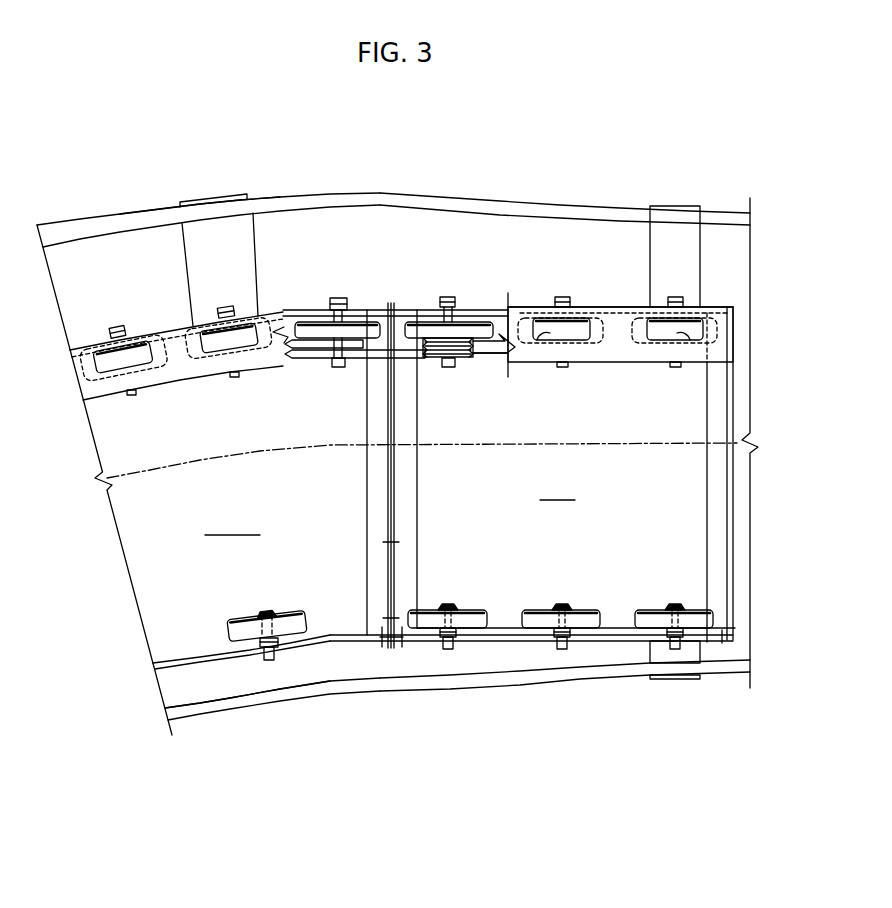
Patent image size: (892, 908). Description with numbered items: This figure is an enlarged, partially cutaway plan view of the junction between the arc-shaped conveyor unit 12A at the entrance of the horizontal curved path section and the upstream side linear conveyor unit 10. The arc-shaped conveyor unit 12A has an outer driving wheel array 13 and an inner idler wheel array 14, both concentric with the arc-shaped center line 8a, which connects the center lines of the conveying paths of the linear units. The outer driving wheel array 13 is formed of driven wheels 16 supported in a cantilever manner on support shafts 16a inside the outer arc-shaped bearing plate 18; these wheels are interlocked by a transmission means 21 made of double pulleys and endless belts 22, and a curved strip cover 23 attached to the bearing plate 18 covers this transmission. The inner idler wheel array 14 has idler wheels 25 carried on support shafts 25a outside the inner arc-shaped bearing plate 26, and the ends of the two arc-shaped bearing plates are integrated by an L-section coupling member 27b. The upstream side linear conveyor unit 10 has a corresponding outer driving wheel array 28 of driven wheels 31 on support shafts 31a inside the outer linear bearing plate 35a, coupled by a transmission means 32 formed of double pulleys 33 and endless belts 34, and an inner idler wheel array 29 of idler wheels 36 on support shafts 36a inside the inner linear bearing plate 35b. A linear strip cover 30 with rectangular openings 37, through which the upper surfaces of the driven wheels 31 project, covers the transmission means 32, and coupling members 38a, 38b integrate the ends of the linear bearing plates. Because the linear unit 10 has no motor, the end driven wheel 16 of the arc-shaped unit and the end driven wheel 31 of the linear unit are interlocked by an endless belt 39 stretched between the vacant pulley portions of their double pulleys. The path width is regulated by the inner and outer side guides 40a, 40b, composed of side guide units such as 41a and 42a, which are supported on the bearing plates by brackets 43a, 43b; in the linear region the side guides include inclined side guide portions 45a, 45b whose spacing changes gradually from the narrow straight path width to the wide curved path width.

The arc-shaped center line 8a is at (153, 470).
The upstream side linear conveyor unit 10 is at (576, 549).
The arc-shaped conveyor unit 12A is at (177, 427).
The outer driving wheel array 13 is at (110, 380).
The inner idler wheel array 14 is at (230, 611).
The driven wheel 16 is at (212, 340).
The support shaft 16a is at (306, 322).
The outer arc-shaped bearing plate 18 is at (99, 330).
The transmission means 21 is at (302, 364).
The endless belt 22 is at (285, 346).
The strip cover 23 is at (182, 368).
The idler wheel 25 is at (249, 636).
The support shaft 25a is at (293, 620).
The inner arc-shaped bearing plate 26 is at (187, 658).
The coupling member 27b is at (370, 523).
The outer driving wheel array 28 is at (581, 349).
The inner idler wheel array 29 is at (582, 601).
The strip cover 30 is at (641, 360).
The driven wheel 31 is at (428, 326).
The support shaft 31a is at (452, 332).
The transmission means 32 is at (480, 364).
The double pulley 33 is at (440, 358).
The endless belt 34 is at (495, 347).
The outer linear bearing plate 35a is at (528, 310).
The inner linear bearing plate 35b is at (503, 637).
The idler wheel 36 is at (533, 615).
The support shaft 36a is at (442, 618).
The rectangular opening 37 is at (690, 333).
The coupling member 38a is at (413, 513).
The coupling member 38b is at (718, 472).
The endless belt 39 is at (407, 357).
The side guide 40a is at (125, 213).
The side guide 40b is at (302, 704).
The side guide unit 41a is at (147, 219).
The side guide unit 42a is at (213, 704).
The bracket 43a is at (230, 247).
The bracket 43b is at (686, 657).
The inclined side guide portion 45a is at (494, 203).
The inclined side guide portion 45b is at (528, 678).